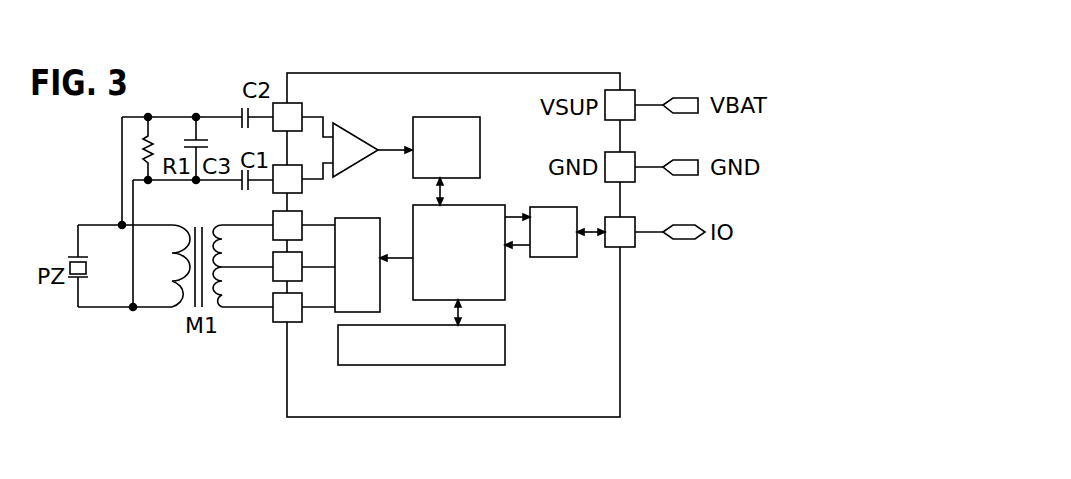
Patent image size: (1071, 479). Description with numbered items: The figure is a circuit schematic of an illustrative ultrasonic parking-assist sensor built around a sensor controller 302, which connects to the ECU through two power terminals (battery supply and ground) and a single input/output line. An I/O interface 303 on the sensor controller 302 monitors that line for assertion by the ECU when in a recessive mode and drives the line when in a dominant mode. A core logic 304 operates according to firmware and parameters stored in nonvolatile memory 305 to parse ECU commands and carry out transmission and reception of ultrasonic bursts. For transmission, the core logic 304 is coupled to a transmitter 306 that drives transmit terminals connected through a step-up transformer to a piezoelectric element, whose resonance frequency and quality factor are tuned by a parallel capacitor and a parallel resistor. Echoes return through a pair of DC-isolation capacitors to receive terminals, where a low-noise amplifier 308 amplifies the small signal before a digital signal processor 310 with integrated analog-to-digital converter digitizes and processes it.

The sensor controller 302 is at (572, 73).
The I/O interface 303 is at (562, 257).
The core logic 304 is at (506, 268).
The nonvolatile memory 305 is at (458, 365).
The transmitter 306 is at (352, 218).
The low-noise amplifier 308 is at (352, 128).
The digital signal processor 310 is at (480, 128).